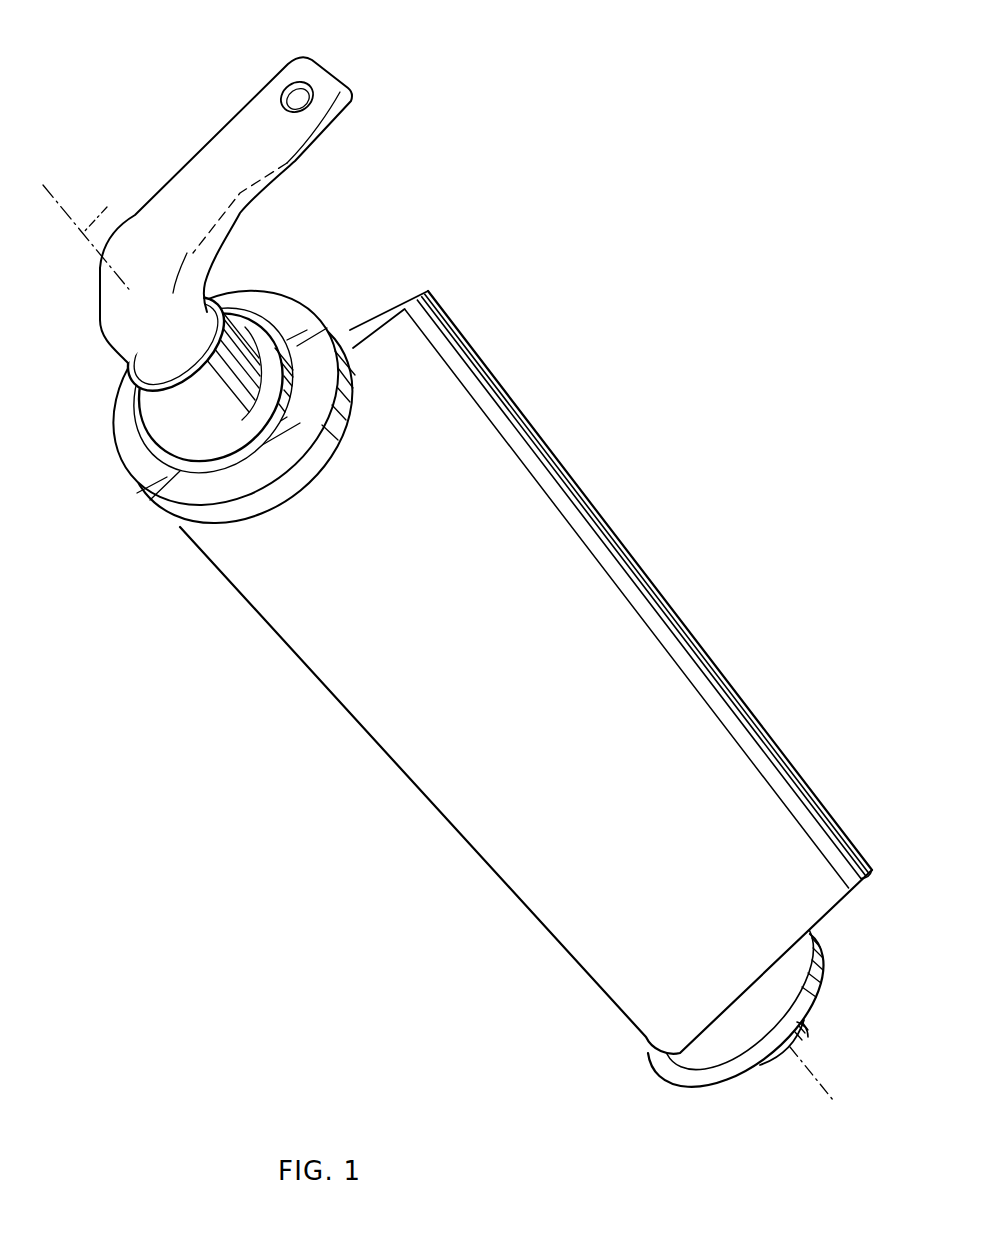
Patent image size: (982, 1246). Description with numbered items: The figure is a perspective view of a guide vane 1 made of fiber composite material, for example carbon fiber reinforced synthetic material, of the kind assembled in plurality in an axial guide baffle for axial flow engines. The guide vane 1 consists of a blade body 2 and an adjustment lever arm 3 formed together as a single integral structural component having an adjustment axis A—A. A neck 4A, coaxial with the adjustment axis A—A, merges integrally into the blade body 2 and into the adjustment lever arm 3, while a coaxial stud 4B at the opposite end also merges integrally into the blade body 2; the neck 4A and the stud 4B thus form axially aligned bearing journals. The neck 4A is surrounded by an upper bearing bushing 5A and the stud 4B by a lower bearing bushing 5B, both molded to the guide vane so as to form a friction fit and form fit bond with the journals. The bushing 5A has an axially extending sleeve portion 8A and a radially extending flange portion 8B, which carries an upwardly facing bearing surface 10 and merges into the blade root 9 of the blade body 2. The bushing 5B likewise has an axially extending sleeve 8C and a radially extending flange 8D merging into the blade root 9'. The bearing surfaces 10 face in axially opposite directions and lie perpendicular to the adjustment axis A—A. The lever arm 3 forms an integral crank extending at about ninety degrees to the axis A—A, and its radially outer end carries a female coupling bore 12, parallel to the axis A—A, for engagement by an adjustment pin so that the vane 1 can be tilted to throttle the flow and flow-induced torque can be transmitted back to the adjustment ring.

The guide vane 1 is at (628, 345).
The blade body 2 is at (578, 460).
The adjustment lever arm 3 is at (283, 165).
The neck 4A is at (145, 368).
The stud 4B is at (792, 1050).
The upper bearing bushing 5A is at (288, 276).
The lower bearing bushing 5B is at (677, 1105).
The sleeve portion 8A is at (140, 428).
The flange portion 8B is at (337, 340).
The sleeve 8C is at (775, 1060).
The flange 8D is at (813, 987).
The blade root 9 is at (609, 556).
The blade root 9' is at (861, 902).
The bearing surface 10 is at (168, 490).
The female coupling bore 12 is at (301, 93).
The adjustment axis A is at (438, 657).